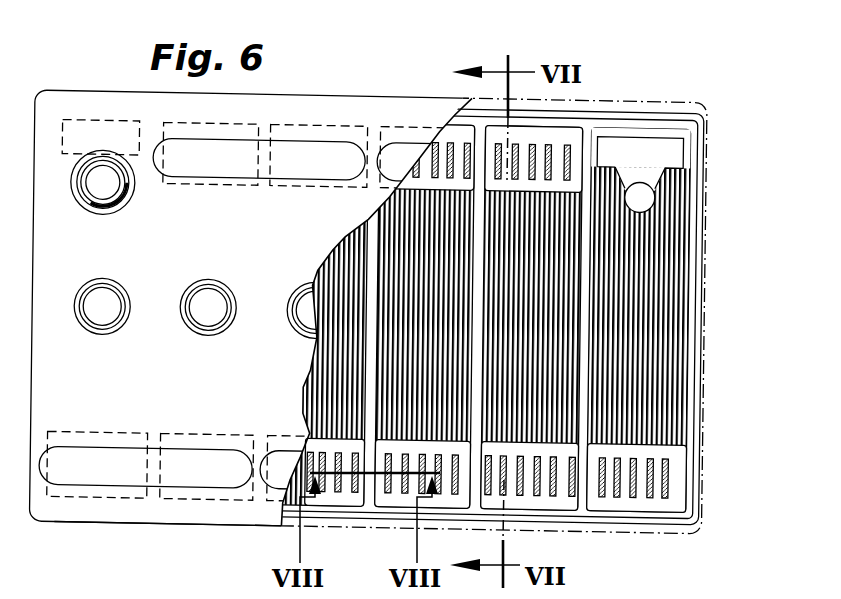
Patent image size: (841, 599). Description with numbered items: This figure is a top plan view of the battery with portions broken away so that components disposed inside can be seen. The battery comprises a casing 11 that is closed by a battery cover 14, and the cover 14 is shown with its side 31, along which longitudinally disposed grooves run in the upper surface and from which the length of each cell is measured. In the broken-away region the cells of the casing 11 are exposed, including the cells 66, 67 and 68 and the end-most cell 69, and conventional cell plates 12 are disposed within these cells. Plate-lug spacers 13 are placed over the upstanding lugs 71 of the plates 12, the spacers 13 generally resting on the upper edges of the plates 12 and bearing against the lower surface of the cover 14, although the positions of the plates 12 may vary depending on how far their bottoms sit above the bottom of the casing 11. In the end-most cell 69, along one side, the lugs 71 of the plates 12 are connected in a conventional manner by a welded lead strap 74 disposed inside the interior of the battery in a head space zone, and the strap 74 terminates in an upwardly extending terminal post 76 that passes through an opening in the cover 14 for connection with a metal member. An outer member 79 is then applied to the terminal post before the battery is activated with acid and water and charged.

The casing 11 is at (708, 187).
The cell plates 12 is at (667, 352).
The plate-lug spacers 13 is at (652, 506).
The battery cover 14 is at (256, 249).
The side of the cover 31 is at (232, 520).
The cell 66 is at (353, 230).
The cell 67 is at (418, 207).
The cell 68 is at (557, 215).
The end-most cell 69 is at (657, 238).
The upstanding lugs 71 is at (551, 143).
The welded lead strap 74 is at (665, 147).
The terminal post 76 is at (645, 193).
The outer members 79 is at (120, 207).